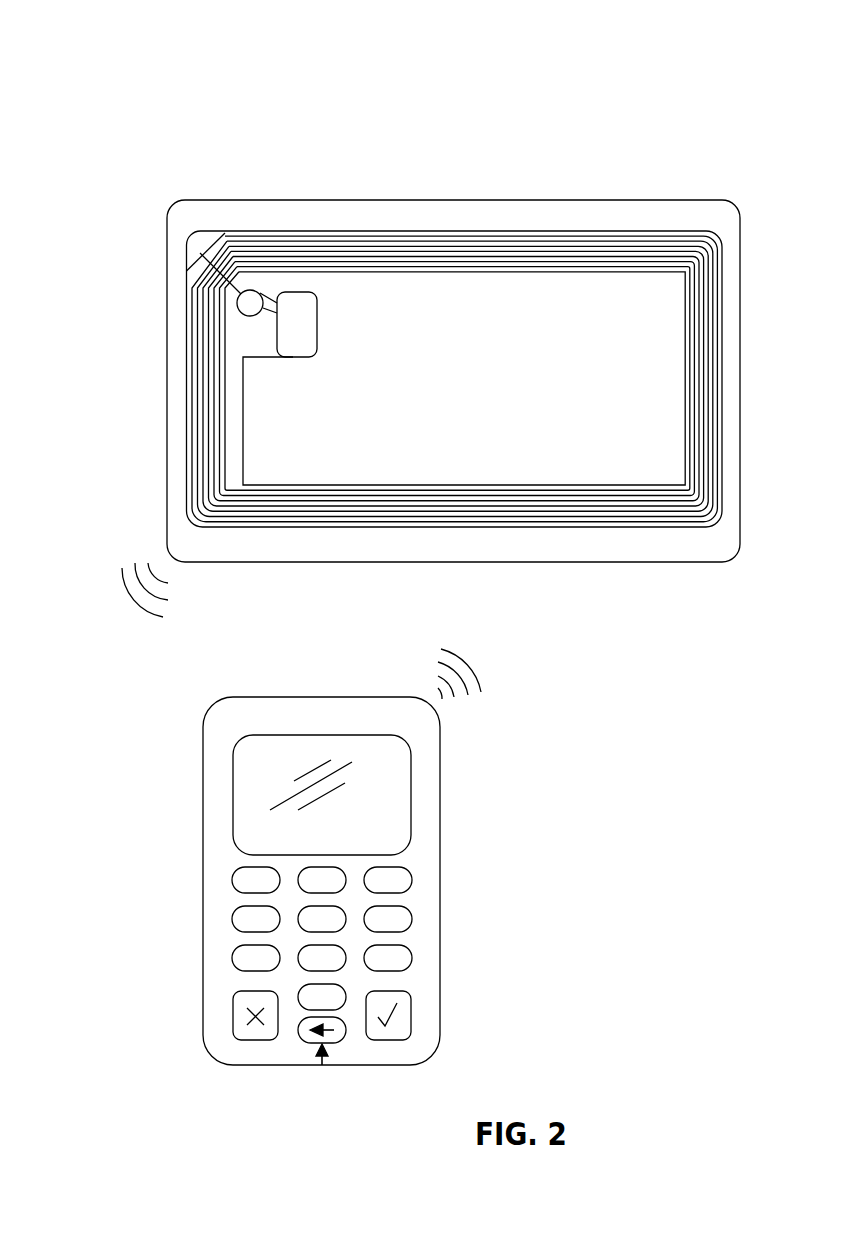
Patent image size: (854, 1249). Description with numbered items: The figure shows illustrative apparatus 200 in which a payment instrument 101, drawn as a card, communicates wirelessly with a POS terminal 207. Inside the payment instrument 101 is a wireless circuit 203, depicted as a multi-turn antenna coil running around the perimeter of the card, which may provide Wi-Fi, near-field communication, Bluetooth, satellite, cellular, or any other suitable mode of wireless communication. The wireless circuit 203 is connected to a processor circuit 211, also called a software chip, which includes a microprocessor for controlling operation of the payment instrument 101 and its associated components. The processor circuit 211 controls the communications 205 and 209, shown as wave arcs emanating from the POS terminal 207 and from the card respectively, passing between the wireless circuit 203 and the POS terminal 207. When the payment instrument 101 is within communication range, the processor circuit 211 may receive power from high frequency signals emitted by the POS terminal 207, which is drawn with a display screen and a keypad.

The system 200 is at (131, 61).
The payment instrument 101 is at (240, 200).
The wireless circuit 203 is at (661, 531).
The processor circuit 211 is at (294, 360).
The communication 209 is at (135, 593).
The communication 205 is at (470, 665).
The POS terminal 207 is at (443, 918).